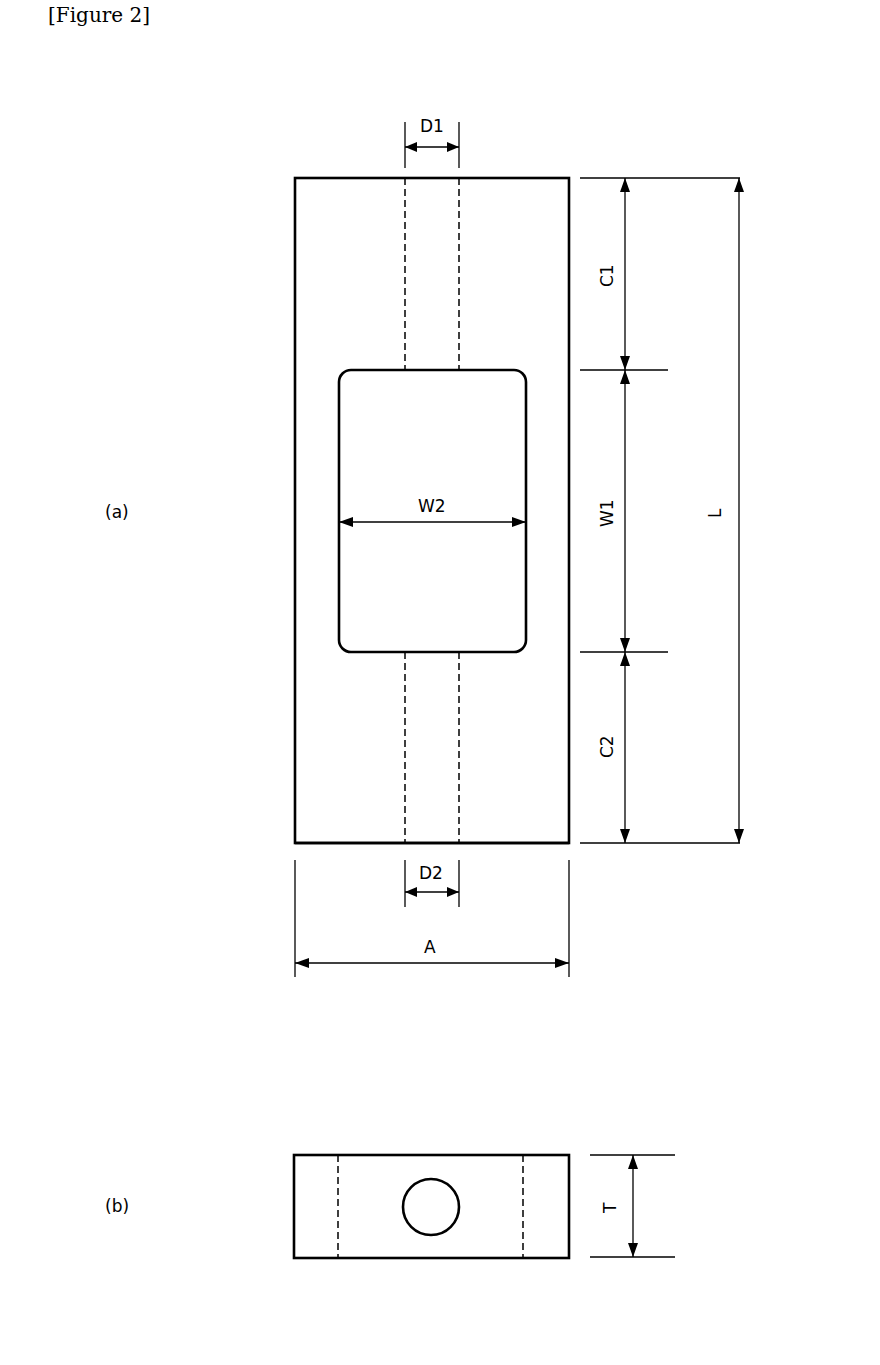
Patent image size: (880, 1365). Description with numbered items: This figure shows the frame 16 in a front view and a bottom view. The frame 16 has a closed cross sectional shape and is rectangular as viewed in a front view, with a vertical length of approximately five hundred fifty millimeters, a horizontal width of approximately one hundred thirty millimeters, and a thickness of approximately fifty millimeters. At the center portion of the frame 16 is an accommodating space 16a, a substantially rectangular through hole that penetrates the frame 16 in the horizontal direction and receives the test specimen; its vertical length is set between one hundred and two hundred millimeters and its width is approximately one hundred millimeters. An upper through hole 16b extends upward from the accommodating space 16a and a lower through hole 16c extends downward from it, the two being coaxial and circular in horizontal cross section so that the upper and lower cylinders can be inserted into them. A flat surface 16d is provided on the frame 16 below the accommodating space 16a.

The frame 16 is at (255, 160).
The accommodating space 16a is at (492, 371).
The upper through hole 16b is at (405, 328).
The lower through hole 16c is at (458, 694).
The flat surface 16d is at (300, 846).